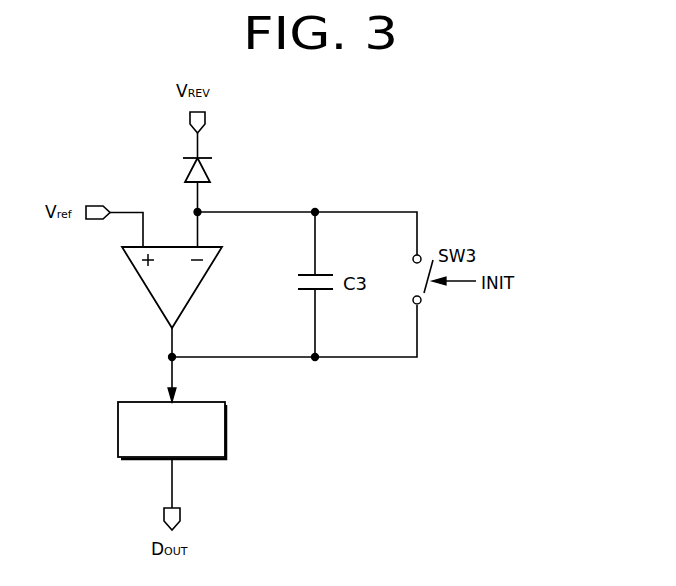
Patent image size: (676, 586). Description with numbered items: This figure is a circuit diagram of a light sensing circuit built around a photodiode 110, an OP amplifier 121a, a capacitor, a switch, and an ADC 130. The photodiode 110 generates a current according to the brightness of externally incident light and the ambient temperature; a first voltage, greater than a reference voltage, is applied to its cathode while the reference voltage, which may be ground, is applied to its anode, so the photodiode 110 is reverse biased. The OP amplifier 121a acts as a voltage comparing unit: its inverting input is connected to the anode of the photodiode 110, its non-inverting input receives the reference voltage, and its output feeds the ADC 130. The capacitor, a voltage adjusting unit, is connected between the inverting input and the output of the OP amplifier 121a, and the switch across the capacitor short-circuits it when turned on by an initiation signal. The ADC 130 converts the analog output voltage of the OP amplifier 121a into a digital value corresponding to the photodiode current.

The photodiode 110 is at (205, 168).
The OP amplifier 121a is at (143, 290).
The ADC 130 is at (194, 402).